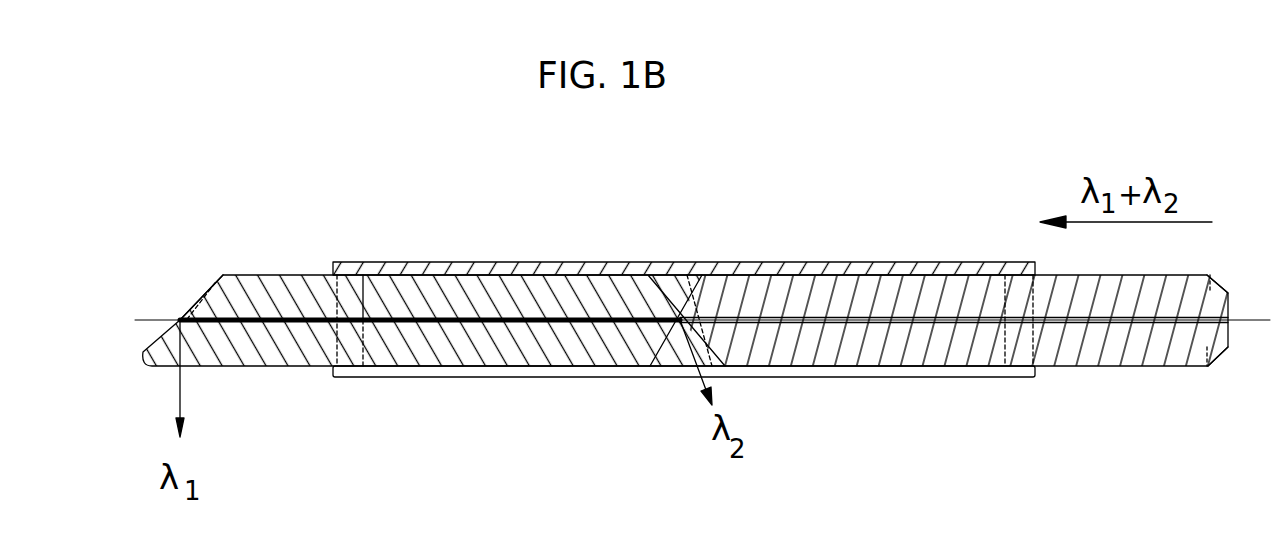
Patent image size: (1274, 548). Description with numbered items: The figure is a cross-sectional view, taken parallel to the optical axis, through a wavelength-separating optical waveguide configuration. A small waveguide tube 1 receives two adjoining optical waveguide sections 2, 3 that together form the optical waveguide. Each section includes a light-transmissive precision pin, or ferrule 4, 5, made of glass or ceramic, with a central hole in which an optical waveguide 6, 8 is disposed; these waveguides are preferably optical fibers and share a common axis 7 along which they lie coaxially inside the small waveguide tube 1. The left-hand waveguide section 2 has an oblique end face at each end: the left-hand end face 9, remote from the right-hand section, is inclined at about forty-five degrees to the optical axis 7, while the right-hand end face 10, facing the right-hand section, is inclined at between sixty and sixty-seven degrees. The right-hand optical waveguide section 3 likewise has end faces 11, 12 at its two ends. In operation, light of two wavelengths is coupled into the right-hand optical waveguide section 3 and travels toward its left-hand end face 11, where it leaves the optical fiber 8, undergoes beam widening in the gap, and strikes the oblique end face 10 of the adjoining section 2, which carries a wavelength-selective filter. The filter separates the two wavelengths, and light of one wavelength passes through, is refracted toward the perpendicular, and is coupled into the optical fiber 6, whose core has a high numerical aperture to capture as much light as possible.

The small waveguide tube 1 is at (412, 266).
The left-hand optical waveguide section 2 is at (277, 372).
The right-hand optical waveguide section 3 is at (1112, 371).
The precision pin (ferrule) 4 is at (582, 290).
The precision pin (ferrule) 5 is at (790, 292).
The optical waveguide (optical fiber) 6 is at (480, 316).
The common axis (optical axis) 7 is at (152, 320).
The optical waveguide (optical fiber) 8 is at (870, 318).
The left-hand end face 9 is at (212, 298).
The right-hand end face 10 is at (679, 325).
The left-hand end face 11 is at (688, 326).
The end face 12 is at (1220, 287).